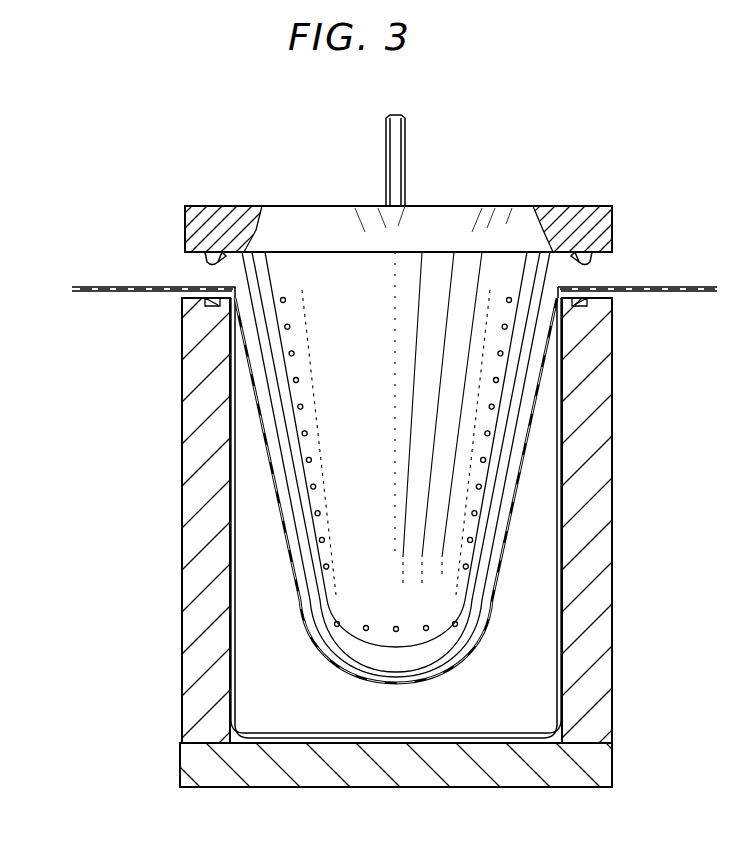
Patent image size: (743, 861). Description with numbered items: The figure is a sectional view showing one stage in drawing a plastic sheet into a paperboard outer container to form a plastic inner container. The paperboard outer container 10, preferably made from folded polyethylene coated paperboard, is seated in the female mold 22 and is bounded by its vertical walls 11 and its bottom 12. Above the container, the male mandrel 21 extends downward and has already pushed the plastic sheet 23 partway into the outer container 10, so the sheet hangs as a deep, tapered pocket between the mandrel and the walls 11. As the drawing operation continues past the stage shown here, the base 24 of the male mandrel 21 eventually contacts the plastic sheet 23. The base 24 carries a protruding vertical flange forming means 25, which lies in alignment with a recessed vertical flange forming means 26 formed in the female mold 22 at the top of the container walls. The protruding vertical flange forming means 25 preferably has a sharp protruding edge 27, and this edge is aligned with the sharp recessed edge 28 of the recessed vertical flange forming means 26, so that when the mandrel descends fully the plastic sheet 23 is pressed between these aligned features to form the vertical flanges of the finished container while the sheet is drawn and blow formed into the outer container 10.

The paperboard outer container 10 is at (565, 530).
The vertical walls 11 is at (566, 590).
The bottom 12 is at (421, 742).
The male mandrel 21 is at (613, 222).
The female mold 22 is at (612, 743).
The plastic sheet 23 is at (535, 409).
The base of male mandrel 24 is at (404, 244).
The protruding vertical flange forming means 25 is at (200, 258).
The recessed vertical flange forming means 26 is at (205, 300).
The sharp protruding edge 27 is at (216, 265).
The sharp recessed edge 28 is at (217, 305).